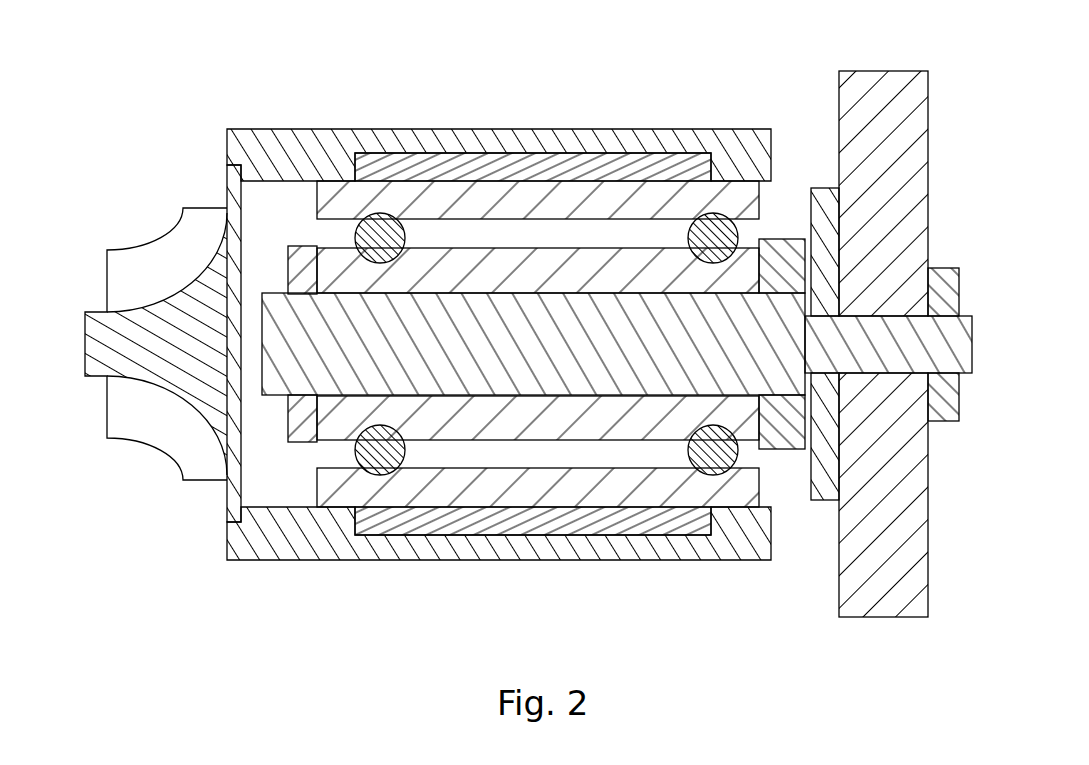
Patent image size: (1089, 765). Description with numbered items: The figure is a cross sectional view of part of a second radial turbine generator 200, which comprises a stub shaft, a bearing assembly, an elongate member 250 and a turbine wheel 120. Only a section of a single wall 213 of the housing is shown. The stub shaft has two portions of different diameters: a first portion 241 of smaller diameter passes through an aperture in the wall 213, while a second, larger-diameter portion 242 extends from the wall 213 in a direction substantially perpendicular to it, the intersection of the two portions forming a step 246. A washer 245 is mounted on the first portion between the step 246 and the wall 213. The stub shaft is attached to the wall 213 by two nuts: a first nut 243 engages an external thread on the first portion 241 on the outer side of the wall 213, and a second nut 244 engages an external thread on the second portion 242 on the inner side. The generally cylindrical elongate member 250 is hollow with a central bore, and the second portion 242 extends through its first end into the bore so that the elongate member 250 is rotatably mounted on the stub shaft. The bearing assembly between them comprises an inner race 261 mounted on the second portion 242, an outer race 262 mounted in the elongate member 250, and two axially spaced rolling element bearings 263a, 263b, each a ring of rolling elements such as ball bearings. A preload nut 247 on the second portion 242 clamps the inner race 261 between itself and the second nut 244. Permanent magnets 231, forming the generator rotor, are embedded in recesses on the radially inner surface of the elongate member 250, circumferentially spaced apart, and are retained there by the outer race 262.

The second radial turbine generator 200 is at (178, 74).
The turbine wheel 120 is at (153, 428).
The wall 213 is at (925, 132).
The permanent magnets 231 is at (453, 533).
The first portion of the stub shaft 241 is at (845, 378).
The second portion of the stub shaft 242 is at (300, 423).
The first nut 243 is at (960, 293).
The second nut 244 is at (806, 396).
The washer 245 is at (825, 493).
The step 246 is at (873, 347).
The preload nut 247 is at (240, 522).
The elongate member 250 is at (300, 155).
The inner race 261 is at (463, 417).
The outer race 262 is at (635, 487).
The rolling element bearing 263a is at (383, 214).
The rolling element bearing 263b is at (725, 216).